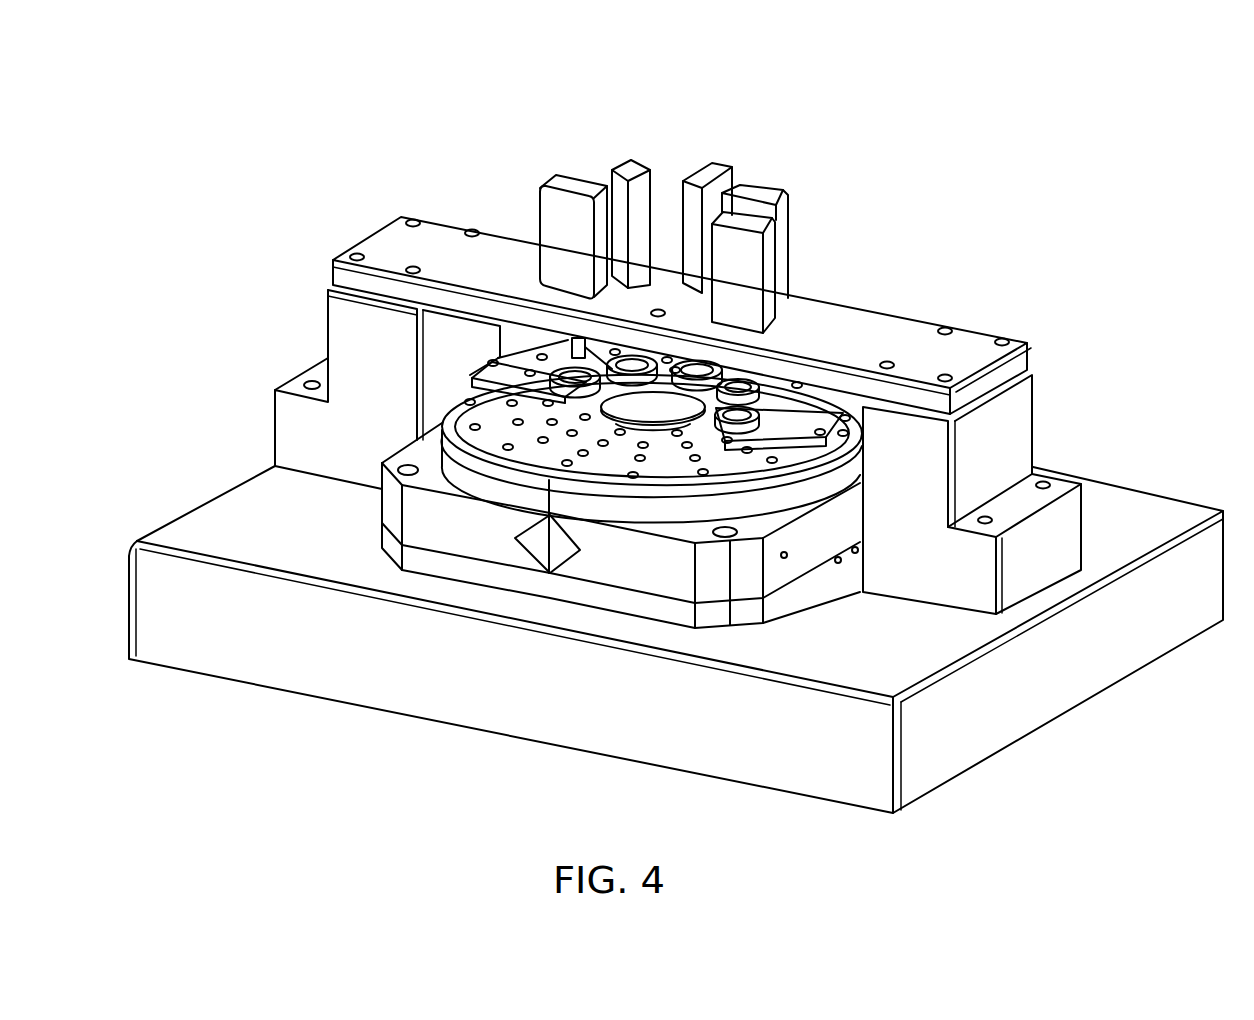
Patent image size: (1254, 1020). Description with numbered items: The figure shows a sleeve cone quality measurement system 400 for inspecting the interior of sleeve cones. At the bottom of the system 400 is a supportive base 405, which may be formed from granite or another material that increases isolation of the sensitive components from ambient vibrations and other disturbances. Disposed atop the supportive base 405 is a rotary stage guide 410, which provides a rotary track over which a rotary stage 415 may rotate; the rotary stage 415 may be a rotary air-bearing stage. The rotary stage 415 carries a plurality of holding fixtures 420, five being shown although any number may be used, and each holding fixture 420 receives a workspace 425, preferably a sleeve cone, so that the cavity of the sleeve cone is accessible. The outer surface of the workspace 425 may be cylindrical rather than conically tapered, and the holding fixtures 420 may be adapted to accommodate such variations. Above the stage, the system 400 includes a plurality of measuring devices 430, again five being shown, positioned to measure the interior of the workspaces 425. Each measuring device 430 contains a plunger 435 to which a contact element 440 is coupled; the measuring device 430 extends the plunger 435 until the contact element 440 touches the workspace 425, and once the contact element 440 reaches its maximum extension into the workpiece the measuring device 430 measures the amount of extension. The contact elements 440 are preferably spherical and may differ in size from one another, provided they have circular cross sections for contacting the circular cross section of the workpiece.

The sleeve cone quality measurement system 400 is at (950, 83).
The supportive base 405 is at (153, 637).
The rotary stage guide 410 is at (397, 502).
The rotary stage 415 is at (458, 427).
The holding fixtures 420 is at (810, 430).
The workspace 425 is at (748, 383).
The measuring devices 430 is at (641, 162).
The plunger 435 is at (535, 332).
The contact element 440 is at (500, 372).